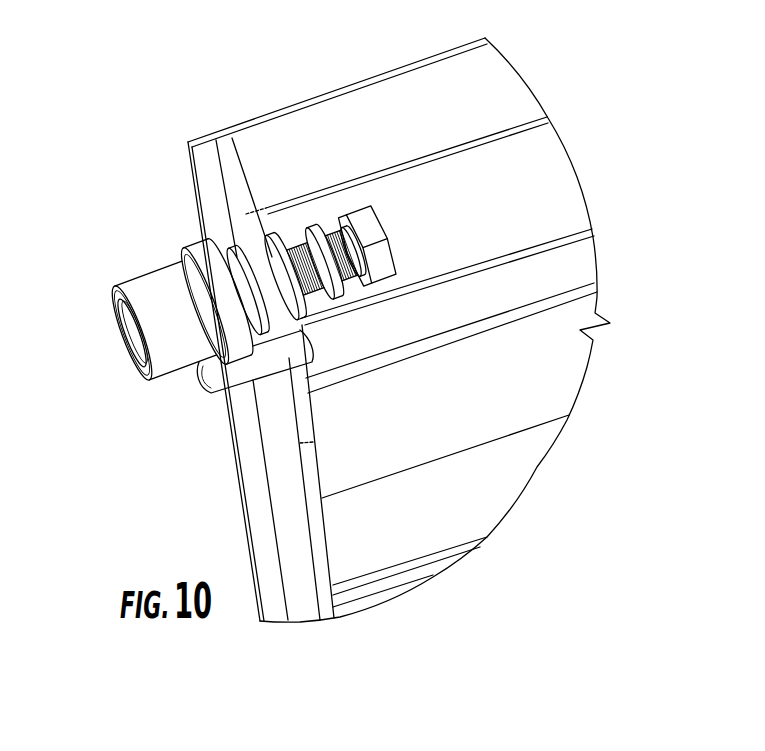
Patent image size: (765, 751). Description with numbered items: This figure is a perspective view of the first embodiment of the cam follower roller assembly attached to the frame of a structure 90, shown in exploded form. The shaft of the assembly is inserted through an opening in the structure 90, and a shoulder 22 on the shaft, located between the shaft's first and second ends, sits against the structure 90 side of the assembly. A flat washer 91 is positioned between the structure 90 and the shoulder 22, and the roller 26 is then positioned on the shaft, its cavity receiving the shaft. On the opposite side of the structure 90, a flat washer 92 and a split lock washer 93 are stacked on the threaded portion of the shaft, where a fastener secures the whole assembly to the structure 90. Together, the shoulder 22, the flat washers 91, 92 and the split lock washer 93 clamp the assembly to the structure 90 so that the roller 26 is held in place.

The shoulder 22 is at (236, 248).
The roller 26 is at (160, 290).
The structure 90 is at (252, 468).
The flat washer 91 is at (289, 236).
The flat washer 92 is at (246, 236).
The split lock washer 93 is at (330, 238).